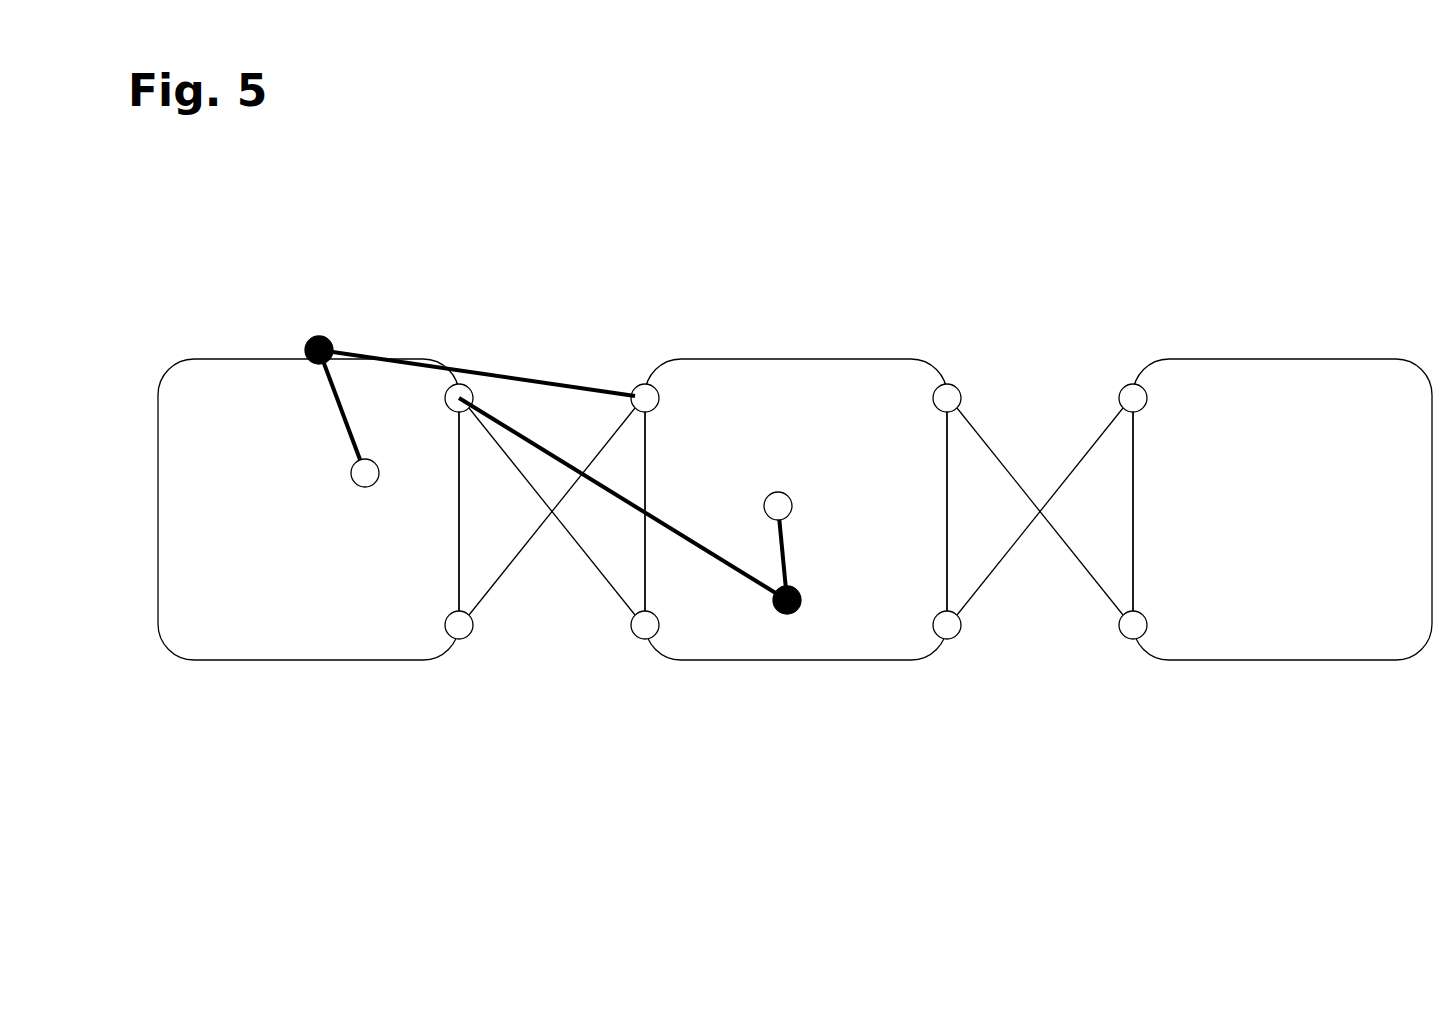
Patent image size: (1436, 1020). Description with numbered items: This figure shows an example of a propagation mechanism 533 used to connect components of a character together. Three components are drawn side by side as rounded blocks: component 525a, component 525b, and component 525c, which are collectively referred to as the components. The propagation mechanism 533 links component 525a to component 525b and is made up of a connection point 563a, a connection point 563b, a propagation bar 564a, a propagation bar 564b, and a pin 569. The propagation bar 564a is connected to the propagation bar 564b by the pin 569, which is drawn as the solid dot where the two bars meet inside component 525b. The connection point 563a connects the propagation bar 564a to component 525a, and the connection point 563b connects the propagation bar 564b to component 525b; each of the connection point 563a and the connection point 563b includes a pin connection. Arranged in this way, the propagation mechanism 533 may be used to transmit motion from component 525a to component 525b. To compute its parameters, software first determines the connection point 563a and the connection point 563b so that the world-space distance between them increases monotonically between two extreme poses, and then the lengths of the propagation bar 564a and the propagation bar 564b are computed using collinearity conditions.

The component 525a is at (338, 647).
The component 525b is at (823, 647).
The component 525c is at (1311, 649).
The propagation mechanism 533 is at (738, 448).
The connection point 563a is at (445, 407).
The connection point 563b is at (790, 491).
The propagation bar 564a is at (668, 518).
The propagation bar 564b is at (787, 568).
The pin 569 is at (805, 593).